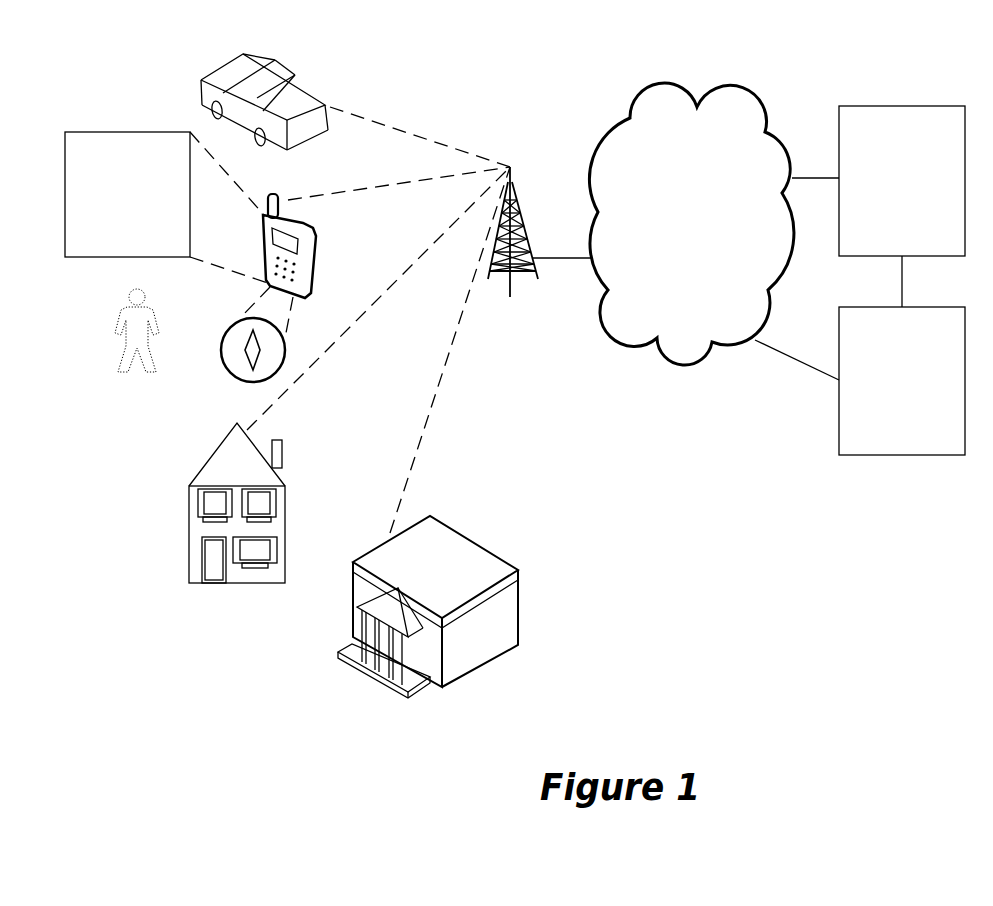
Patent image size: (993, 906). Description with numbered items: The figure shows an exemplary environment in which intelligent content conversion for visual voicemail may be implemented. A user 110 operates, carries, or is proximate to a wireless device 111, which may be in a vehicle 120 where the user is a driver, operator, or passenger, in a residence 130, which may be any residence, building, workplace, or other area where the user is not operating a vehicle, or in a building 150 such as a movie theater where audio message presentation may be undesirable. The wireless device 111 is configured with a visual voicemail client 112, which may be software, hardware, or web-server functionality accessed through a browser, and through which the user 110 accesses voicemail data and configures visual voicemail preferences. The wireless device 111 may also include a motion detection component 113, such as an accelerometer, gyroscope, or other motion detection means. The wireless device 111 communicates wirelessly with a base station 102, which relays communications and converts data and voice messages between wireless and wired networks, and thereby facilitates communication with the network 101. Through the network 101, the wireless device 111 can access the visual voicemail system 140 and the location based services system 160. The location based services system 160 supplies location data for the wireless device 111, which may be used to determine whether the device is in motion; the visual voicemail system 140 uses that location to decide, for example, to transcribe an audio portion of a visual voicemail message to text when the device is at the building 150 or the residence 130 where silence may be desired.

The network 101 is at (691, 224).
The base station 102 is at (511, 297).
The user 110 is at (152, 355).
The wireless device 111 is at (305, 284).
The visual voicemail client 112 is at (127, 194).
The motion detection component 113 is at (222, 337).
The vehicle 120 is at (303, 81).
The residence 130 is at (286, 525).
The visual voicemail system 140 is at (902, 181).
The building 150 is at (519, 607).
The location based services system 160 is at (902, 381).